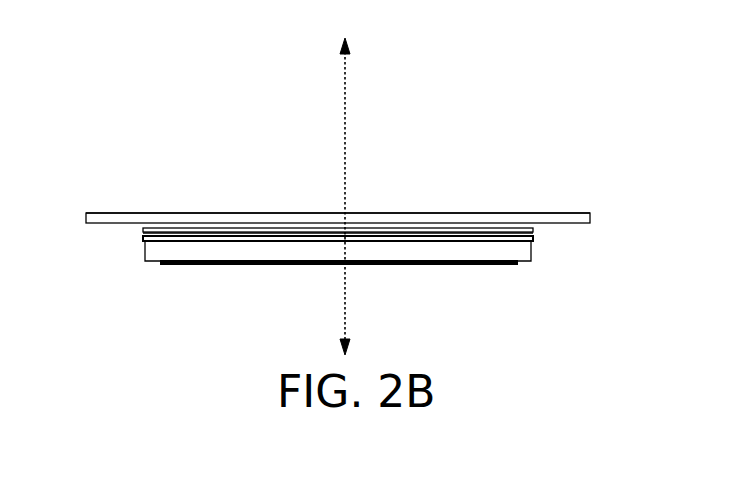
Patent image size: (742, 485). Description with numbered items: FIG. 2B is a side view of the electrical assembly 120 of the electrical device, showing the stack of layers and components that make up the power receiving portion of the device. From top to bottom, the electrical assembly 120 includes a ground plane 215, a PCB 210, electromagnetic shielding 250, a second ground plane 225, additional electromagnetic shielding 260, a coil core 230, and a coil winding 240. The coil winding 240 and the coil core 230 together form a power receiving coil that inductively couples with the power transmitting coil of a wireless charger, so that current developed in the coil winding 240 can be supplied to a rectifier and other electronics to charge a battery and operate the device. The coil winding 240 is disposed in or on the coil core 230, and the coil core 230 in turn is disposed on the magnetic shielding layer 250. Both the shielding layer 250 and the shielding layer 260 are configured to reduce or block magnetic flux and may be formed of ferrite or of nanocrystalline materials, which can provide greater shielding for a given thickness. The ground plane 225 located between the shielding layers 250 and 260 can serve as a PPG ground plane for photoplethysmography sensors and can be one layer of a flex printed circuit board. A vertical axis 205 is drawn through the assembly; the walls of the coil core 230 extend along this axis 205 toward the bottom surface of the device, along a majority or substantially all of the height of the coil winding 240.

The electrical assembly 120 is at (470, 130).
The axis 205 is at (345, 102).
The PCB 210 is at (580, 218).
The ground plane 215 is at (502, 213).
The second ground plane 225 is at (535, 233).
The coil core 230 is at (287, 250).
The coil winding 240 is at (488, 267).
The electromagnetic shielding 250 is at (147, 230).
The additional electromagnetic shielding 260 is at (146, 241).